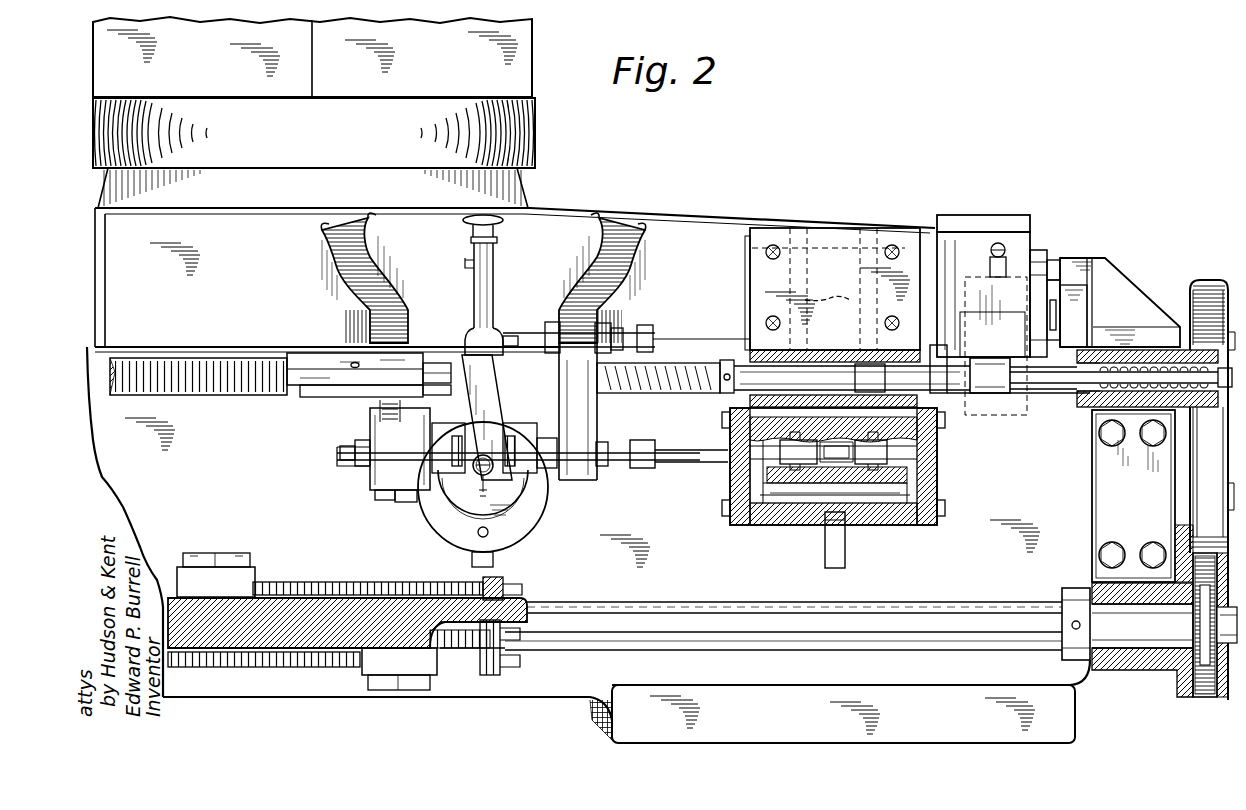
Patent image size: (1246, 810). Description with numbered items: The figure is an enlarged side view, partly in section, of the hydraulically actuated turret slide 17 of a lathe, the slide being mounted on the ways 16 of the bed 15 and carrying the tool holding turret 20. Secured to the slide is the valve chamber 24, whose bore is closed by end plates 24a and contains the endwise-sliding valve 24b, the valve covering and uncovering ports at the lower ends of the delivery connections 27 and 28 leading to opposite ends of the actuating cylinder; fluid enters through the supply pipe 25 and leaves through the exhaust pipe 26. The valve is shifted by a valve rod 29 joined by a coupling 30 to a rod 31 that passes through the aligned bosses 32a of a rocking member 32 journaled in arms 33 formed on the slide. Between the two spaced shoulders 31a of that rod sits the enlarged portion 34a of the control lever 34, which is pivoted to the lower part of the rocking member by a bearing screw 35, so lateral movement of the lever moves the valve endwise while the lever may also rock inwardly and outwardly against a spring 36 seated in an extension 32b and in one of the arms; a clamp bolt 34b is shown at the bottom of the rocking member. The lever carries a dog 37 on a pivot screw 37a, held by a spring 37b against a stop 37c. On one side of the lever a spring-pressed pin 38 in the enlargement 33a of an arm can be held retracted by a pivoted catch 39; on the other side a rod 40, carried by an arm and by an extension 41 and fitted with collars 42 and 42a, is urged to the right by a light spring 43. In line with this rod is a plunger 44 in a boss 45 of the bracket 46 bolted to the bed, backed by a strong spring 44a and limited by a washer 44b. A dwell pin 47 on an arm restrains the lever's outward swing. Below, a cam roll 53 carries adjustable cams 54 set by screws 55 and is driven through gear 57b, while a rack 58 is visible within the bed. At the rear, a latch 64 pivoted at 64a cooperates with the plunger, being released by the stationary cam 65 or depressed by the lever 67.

The bed 15 is at (127, 450).
The ways 16 is at (1085, 285).
The turret slide 17 is at (693, 230).
The tool holding turret 20 is at (525, 56).
The valve chamber 24 is at (890, 520).
The end plates 24a is at (965, 500).
The valve 24b is at (895, 452).
The supply pipe 25 is at (815, 500).
The exhaust pipe 26 is at (825, 548).
The delivery connection 27 is at (790, 292).
The delivery connection 28 is at (827, 294).
The valve rod 29 is at (670, 465).
The coupling 30 is at (640, 468).
The rod 31 is at (604, 468).
The shoulders 31a is at (548, 475).
The rocking member 32 is at (415, 495).
The bosses 32a is at (632, 428).
The extension 32b is at (360, 458).
The arms 33 is at (365, 305).
The enlargement 33a is at (310, 362).
The control lever 34 is at (478, 283).
The enlarged portion 34a is at (425, 512).
The clamp bolt 34b is at (470, 562).
The bearing screw 35 is at (490, 533).
The spring 36 is at (375, 420).
The dog 37 is at (503, 432).
The pivot screw 37a is at (490, 485).
The spring 37b is at (495, 492).
The stop 37c is at (466, 458).
The spring-pressed pin 38 is at (434, 362).
The pivoted catch 39 is at (445, 364).
The rod 40 is at (525, 360).
The extension 41 is at (958, 400).
The collar 42 is at (724, 360).
The collar 42a is at (838, 368).
The light spring 43 is at (668, 362).
The plunger 44 is at (995, 396).
The spring 44a is at (1137, 407).
The washer 44b is at (1205, 410).
The boss 45 is at (1085, 408).
The bracket 46 is at (1110, 490).
The dwell pin 47 is at (512, 337).
The cam roll 53 is at (665, 625).
The cams 54 is at (226, 552).
The screws 55 is at (308, 586).
The gear 57b is at (1215, 698).
The rack 58 is at (212, 393).
The pivoted latch 64 is at (1035, 340).
The latch pivot 64a is at (1062, 328).
The stationary cam 65 is at (1068, 268).
The lever 67 is at (1035, 255).